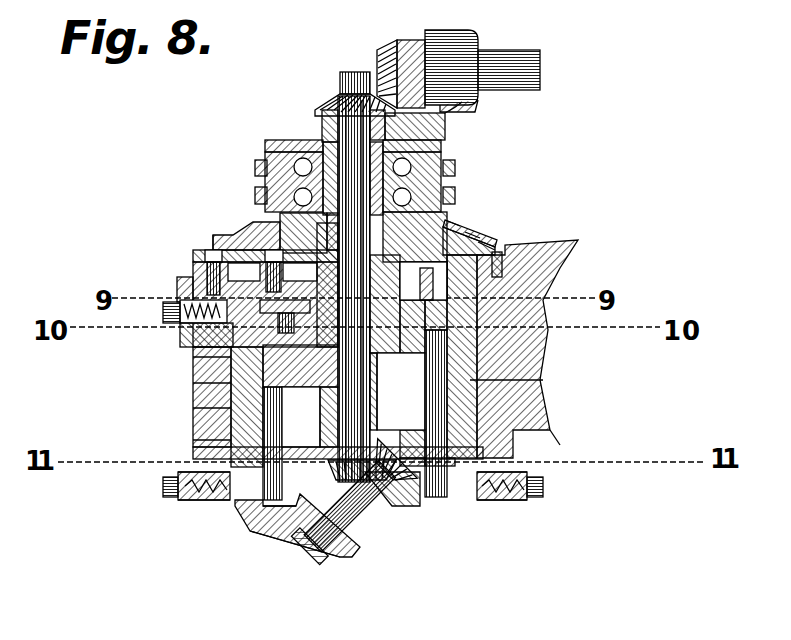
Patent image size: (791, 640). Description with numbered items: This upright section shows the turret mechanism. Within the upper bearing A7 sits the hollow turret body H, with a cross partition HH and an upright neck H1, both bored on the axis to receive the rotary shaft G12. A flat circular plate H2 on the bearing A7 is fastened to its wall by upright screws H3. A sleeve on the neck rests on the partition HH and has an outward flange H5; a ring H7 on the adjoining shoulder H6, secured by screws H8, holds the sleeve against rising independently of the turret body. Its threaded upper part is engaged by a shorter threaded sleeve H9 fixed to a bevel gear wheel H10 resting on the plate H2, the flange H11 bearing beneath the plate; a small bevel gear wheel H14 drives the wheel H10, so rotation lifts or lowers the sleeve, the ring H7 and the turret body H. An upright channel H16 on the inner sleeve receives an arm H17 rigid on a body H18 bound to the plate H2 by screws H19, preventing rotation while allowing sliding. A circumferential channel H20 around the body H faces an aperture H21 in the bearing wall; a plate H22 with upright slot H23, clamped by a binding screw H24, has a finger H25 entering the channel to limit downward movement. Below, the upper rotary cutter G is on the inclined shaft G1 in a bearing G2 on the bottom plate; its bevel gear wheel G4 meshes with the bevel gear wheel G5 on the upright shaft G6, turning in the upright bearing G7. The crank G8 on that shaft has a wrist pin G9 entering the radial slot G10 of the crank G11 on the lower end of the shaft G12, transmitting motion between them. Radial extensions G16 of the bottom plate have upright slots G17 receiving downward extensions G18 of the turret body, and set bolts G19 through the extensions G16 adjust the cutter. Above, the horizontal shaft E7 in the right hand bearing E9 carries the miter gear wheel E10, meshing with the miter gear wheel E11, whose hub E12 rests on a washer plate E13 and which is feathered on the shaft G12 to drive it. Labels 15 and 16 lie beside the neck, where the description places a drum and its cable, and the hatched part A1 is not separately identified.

The horizontal shaft E7 is at (535, 58).
The right hand bearing E9 is at (450, 51).
The miter gear wheel E10 is at (384, 52).
The miter gear wheel E11 is at (327, 92).
The hub E12 is at (330, 124).
The washer plate E13 is at (290, 150).
The rotary shaft G12 is at (345, 73).
The upright neck H1 is at (336, 126).
The interiorly screw threaded sleeve H9 is at (440, 154).
The bearing nut 15 is at (292, 162).
The bearing nut 16 is at (258, 192).
The small bevel gear wheel H14 is at (255, 224).
The upright channel H16 is at (245, 236).
The screws H19 is at (213, 244).
The arm H17 is at (212, 252).
The body H18 is at (212, 260).
The upright screws H3 is at (200, 264).
The flat circular plate H2 is at (197, 277).
The binding screw H24 is at (178, 292).
The plate H22 is at (188, 298).
The upright slot H23 is at (182, 310).
The finger H25 is at (180, 336).
The aperture H21 is at (230, 350).
The shoulder H6 is at (230, 370).
The cross partition HH is at (195, 381).
The outward directed flange H5 is at (195, 406).
The slot G10 is at (240, 396).
The hollow turret body H is at (197, 426).
The wrist pin G9 is at (283, 348).
The main body A1 is at (546, 391).
The circumferential channel H20 is at (546, 346).
The bevel gear wheel H10 is at (453, 225).
The outward directed flange H11 is at (487, 247).
The ring H7 is at (505, 248).
The screws H8 is at (500, 252).
The horizontal crank G11 is at (376, 360).
The horizontal crank G8 is at (388, 378).
The upright bearing G7 is at (250, 530).
The upper rotary cutter G is at (375, 545).
The inclined shaft G1 is at (333, 550).
The bearing G2 is at (318, 536).
The bevel gear wheel G4 is at (273, 540).
The bevel gear wheel G5 is at (410, 468).
The upright shaft G6 is at (456, 468).
The set bolts G19 is at (165, 486).
The horizontal radial extensions G16 is at (186, 496).
The upright slots G17 is at (216, 500).
The downward extensions G18 is at (232, 500).
The upper bearing A7 is at (195, 442).